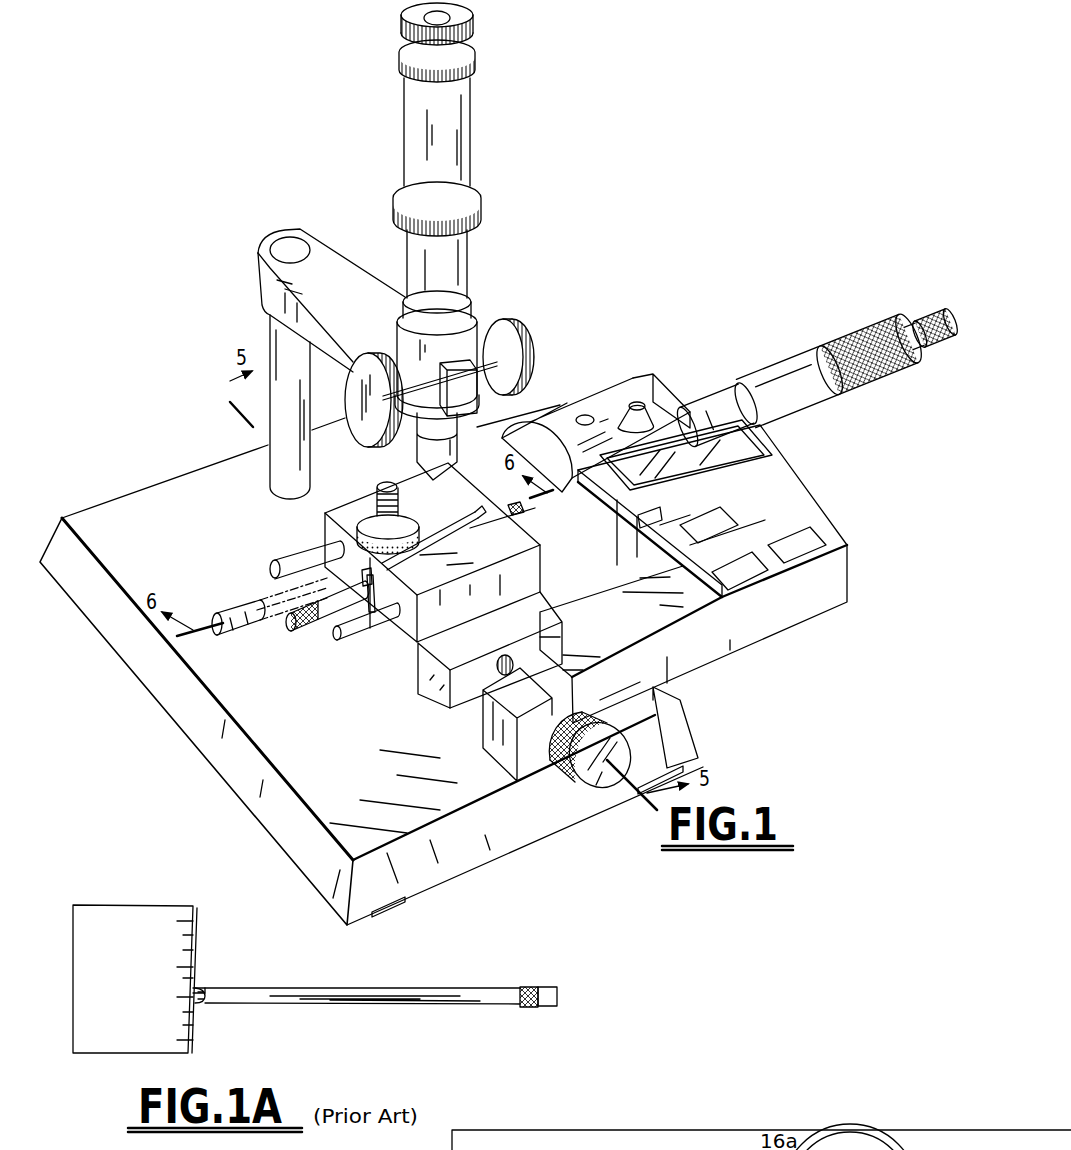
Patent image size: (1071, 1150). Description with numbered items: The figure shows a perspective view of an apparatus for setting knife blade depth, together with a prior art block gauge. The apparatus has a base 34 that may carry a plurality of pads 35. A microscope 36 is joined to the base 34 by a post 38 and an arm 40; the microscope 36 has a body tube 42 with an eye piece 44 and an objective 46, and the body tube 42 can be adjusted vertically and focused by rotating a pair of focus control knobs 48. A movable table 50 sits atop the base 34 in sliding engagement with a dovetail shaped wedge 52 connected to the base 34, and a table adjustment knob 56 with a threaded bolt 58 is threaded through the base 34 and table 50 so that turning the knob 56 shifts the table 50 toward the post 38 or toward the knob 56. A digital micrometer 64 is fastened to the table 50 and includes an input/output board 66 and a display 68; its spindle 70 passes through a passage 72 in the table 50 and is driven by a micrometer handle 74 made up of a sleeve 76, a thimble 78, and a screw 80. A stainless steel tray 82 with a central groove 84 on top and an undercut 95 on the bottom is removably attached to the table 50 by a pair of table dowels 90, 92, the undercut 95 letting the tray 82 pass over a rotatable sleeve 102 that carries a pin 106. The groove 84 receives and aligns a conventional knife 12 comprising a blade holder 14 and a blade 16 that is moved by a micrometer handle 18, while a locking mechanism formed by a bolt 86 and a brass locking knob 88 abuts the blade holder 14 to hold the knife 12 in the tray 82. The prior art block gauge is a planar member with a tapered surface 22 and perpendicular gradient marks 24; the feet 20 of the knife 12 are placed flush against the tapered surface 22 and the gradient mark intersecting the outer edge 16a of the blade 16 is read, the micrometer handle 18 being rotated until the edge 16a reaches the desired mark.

In FIG. 1, the diamond blade knife 12 is at (343, 576).
In FIG. 1A, the diamond blade knife 12 is at (376, 993).
In FIG. 1, the blade holder 14 is at (462, 516).
In FIG. 1A, the blade holder 14 is at (471, 1005).
In FIG. 1, the diamond tipped blade 16 is at (479, 505).
In FIG. 1A, the diamond tipped blade 16 is at (205, 1005).
In FIG. 1A, the outer edge 16a is at (199, 989).
In FIG. 1, the micrometer handle 18 is at (237, 636).
In FIG. 1A, the micrometer handle 18 is at (528, 988).
In FIG. 1A, the feet 20 is at (195, 1003).
In FIG. 1A, the tapered surface 22 is at (200, 946).
In FIG. 1A, the gradient marks 24 is at (178, 970).
In FIG. 1, the base 34 is at (378, 794).
In FIG. 1, the pads 35 is at (402, 900).
In FIG. 1, the microscope 36 is at (540, 364).
In FIG. 1, the post 38 is at (268, 462).
In FIG. 1, the arm 40 is at (283, 282).
In FIG. 1, the body tube 42 is at (480, 150).
In FIG. 1, the eye piece 44 is at (462, 113).
In FIG. 1, the objective 46 is at (418, 452).
In FIG. 1, the focus control knobs 48 is at (508, 340).
In FIG. 1, the movable table 50 is at (483, 655).
In FIG. 1, the dovetail shaped wedge 52 is at (478, 706).
In FIG. 1, the table adjustment knob 56 is at (585, 784).
In FIG. 1, the threaded bolt 58 is at (498, 669).
In FIG. 1, the digital micrometer 64 is at (739, 571).
In FIG. 1, the input/output board 66 is at (795, 521).
In FIG. 1, the display 68 is at (727, 466).
In FIG. 1, the spindle 70 is at (530, 528).
In FIG. 1, the passage 72 is at (524, 510).
In FIG. 1, the micrometer handle 74 is at (817, 353).
In FIG. 1, the sleeve 76 is at (717, 415).
In FIG. 1, the thimble 78 is at (831, 369).
In FIG. 1, the screw 80 is at (931, 329).
In FIG. 1, the tray 82 is at (465, 620).
In FIG. 1, the central groove 84 is at (502, 535).
In FIG. 1, the bolt 86 is at (383, 484).
In FIG. 1, the brass locking knob 88 is at (367, 502).
In FIG. 1, the table dowel 90 is at (297, 557).
In FIG. 1, the table dowel 92 is at (354, 641).
In FIG. 1, the undercut 95 is at (372, 612).
In FIG. 1, the rotatable sleeve 102 is at (326, 621).
In FIG. 1, the pin 106 is at (377, 575).